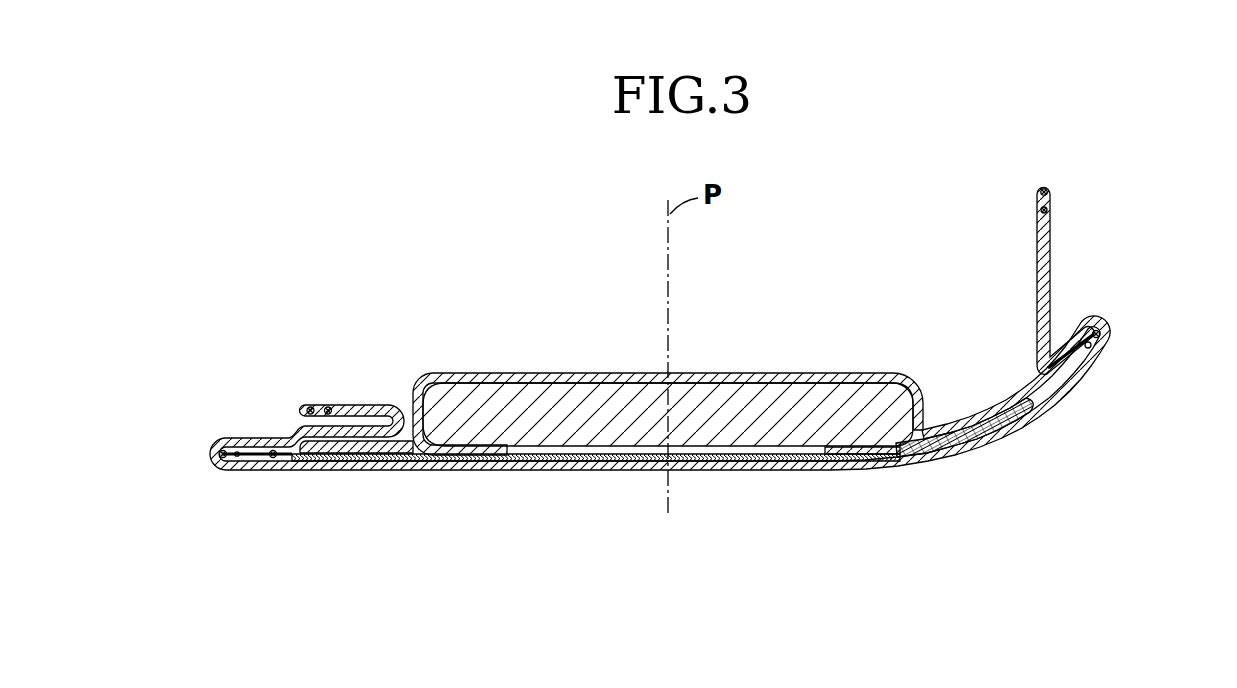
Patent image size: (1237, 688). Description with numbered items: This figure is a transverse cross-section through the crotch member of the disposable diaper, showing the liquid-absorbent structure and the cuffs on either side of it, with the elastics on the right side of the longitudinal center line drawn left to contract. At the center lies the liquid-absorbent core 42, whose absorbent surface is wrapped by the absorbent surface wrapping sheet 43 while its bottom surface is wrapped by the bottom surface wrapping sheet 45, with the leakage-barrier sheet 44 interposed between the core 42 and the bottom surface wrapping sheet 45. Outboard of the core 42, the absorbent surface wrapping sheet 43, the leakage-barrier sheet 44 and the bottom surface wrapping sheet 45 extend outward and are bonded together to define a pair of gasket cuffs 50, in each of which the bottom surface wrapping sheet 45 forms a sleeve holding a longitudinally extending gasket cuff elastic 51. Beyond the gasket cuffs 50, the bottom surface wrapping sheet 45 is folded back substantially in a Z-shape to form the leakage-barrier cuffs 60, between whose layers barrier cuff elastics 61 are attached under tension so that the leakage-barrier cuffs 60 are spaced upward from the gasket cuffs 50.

The liquid-absorbent core 42 is at (555, 420).
The absorbent surface wrapping sheet 43 is at (570, 373).
The leakage-barrier sheet 44 is at (608, 459).
The bottom surface wrapping sheet 45 is at (707, 471).
The gasket cuff 50 is at (222, 409).
The gasket cuff elastic 51 is at (275, 459).
The leakage-barrier cuff 60 is at (381, 386).
The barrier cuff elastic 61 is at (329, 407).